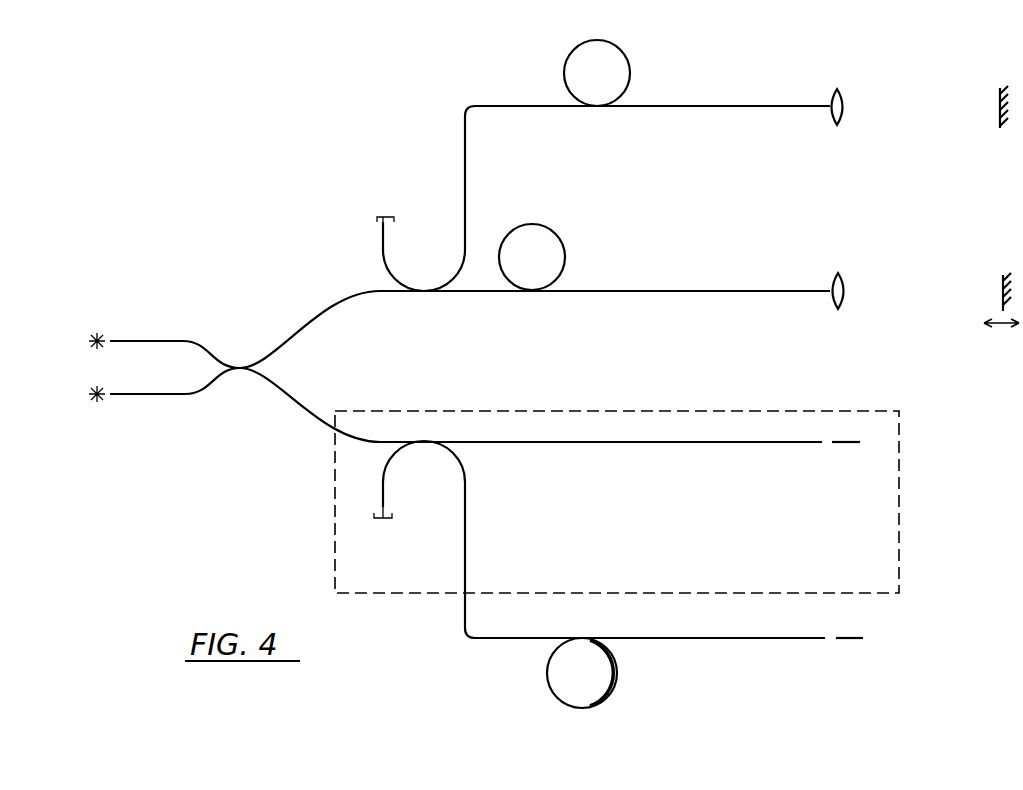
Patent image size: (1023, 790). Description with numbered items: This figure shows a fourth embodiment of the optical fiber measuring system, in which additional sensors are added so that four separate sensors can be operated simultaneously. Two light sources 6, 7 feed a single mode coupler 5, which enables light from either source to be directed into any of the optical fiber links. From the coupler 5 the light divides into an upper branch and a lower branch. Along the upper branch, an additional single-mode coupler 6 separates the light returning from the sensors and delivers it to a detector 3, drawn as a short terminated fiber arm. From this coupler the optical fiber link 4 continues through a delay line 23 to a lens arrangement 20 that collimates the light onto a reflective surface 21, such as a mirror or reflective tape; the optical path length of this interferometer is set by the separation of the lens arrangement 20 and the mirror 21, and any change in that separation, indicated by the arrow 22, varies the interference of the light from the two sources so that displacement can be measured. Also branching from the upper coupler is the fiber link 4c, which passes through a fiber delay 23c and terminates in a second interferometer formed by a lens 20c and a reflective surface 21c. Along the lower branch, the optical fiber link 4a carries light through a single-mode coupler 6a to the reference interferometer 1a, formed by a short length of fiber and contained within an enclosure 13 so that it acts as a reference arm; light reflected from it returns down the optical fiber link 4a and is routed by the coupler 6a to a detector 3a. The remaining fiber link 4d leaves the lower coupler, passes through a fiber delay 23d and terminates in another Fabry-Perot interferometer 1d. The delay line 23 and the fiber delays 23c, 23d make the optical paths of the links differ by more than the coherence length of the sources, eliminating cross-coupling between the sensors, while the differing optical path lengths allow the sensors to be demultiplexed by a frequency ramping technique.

The interferometer 1a is at (852, 443).
The Fabry-Perot interferometer 1d is at (851, 640).
The detector 3 is at (386, 216).
The detector 3a is at (382, 521).
The optical fiber link 4 is at (670, 290).
The optical fiber link 4a is at (636, 440).
The fiber link 4c is at (738, 105).
The fiber link 4d is at (746, 640).
The single mode coupler 5 is at (240, 366).
The light source / single-mode coupler 6 is at (424, 293).
The single-mode coupler 6a is at (421, 440).
The light source 7 is at (164, 399).
The enclosure 13 is at (902, 452).
The lens arrangement 20 is at (851, 288).
The lens 20c is at (850, 103).
The reflective surface (mirror) 21 is at (1000, 291).
The reflective surface 21c is at (996, 116).
The arrow 22 is at (1003, 326).
The delay line 23 is at (566, 251).
The fiber delay 23c is at (630, 81).
The fiber delay 23d is at (547, 672).